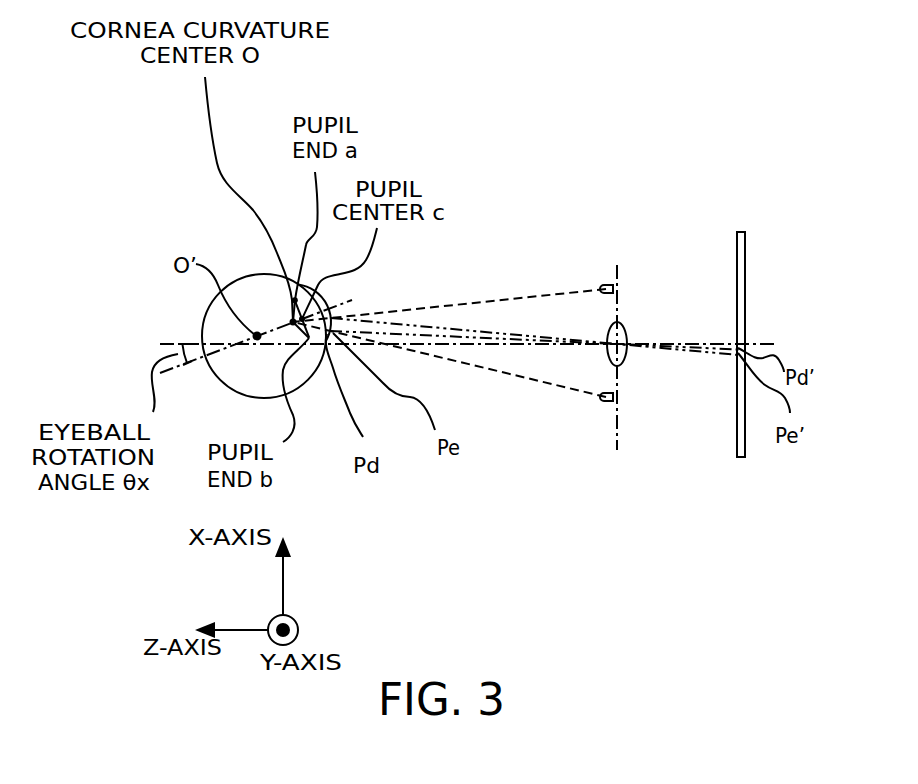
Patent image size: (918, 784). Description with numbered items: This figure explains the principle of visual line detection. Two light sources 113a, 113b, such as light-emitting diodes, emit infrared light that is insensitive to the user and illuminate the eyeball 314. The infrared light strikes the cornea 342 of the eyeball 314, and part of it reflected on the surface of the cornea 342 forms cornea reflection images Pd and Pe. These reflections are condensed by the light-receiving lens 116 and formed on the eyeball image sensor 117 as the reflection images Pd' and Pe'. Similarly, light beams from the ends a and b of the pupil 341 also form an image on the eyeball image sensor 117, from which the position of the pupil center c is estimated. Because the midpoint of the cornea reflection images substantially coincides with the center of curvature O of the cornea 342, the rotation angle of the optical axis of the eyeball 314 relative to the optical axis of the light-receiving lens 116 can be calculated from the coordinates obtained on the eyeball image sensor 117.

The eyeball 314 is at (230, 283).
The pupil 341 is at (299, 311).
The cornea 342 is at (314, 292).
The light source 113a is at (606, 400).
The light source 113b is at (606, 286).
The light-receiving lens 116 is at (613, 366).
The eyeball image sensor 117 is at (740, 457).